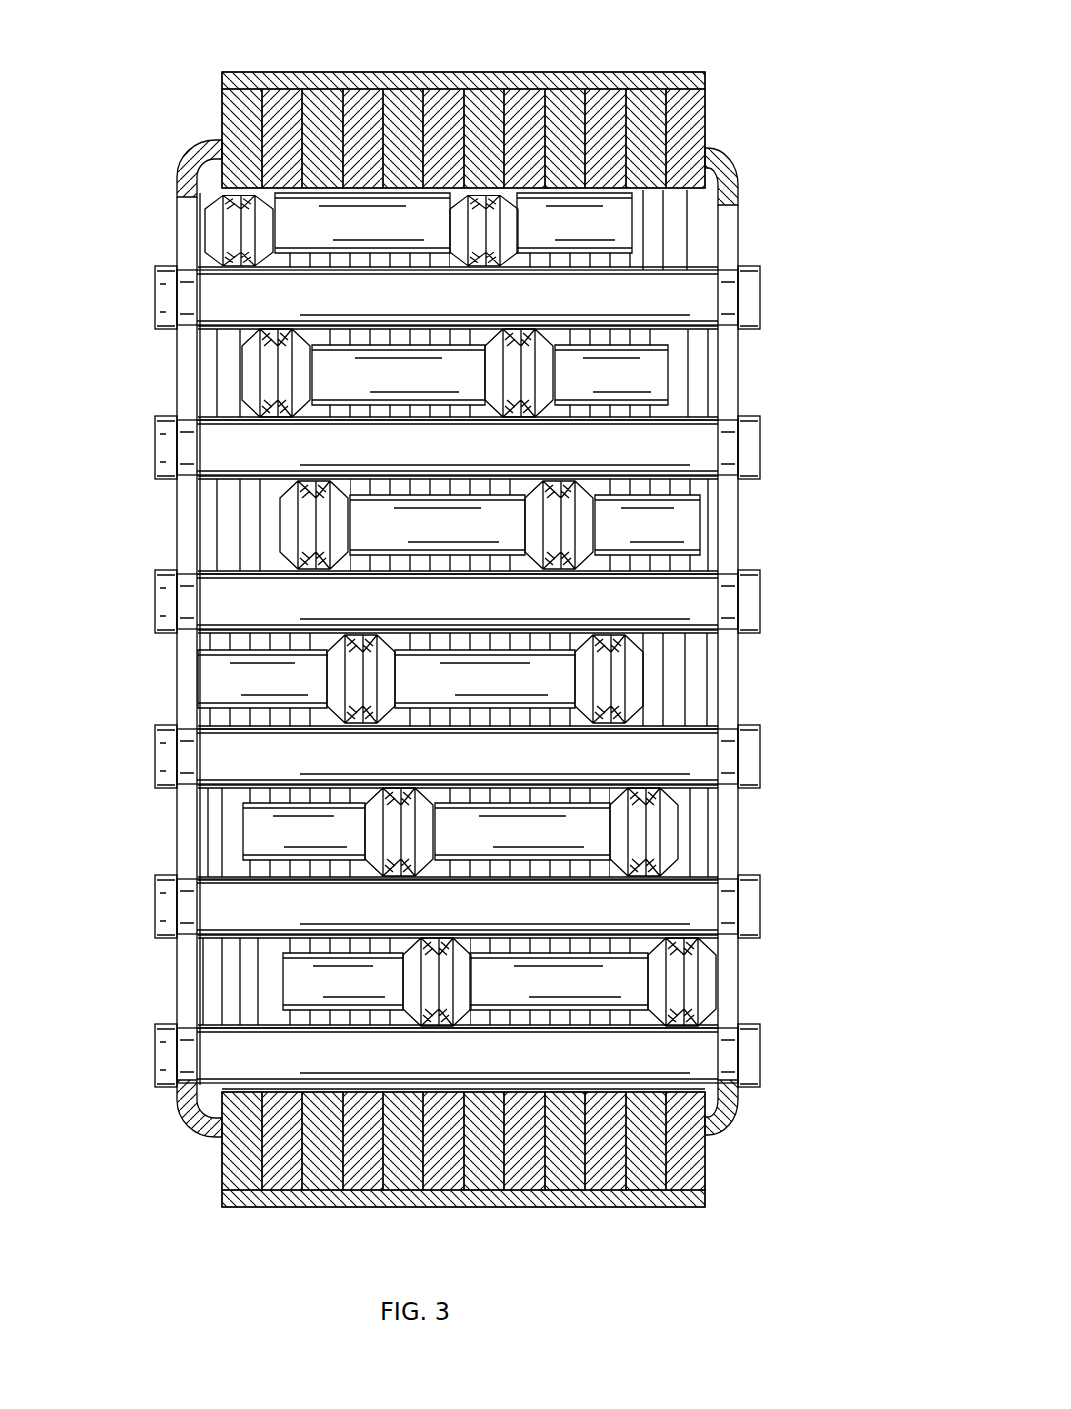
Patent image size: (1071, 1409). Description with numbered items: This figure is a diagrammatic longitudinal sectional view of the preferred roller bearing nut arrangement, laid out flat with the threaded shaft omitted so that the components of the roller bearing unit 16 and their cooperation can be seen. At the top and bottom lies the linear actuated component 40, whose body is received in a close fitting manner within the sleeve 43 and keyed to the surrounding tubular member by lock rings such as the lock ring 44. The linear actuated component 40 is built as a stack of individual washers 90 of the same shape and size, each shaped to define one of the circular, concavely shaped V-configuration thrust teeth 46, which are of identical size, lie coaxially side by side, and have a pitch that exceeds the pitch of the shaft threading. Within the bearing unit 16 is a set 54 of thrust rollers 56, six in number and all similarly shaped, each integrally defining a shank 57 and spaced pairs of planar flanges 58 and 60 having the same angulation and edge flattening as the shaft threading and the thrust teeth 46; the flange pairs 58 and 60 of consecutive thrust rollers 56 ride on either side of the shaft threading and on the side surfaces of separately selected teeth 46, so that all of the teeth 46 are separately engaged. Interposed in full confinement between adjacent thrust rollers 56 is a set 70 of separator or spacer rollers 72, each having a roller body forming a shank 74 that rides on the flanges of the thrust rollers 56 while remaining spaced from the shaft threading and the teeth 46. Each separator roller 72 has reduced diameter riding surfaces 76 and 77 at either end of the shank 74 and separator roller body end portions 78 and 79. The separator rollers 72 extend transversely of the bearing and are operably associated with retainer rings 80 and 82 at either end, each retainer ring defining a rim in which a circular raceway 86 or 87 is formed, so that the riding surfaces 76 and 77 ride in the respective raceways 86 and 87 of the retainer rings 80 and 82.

The roller bearing unit 16 is at (808, 264).
The linear actuated component 40 is at (705, 110).
The sleeve 43 is at (517, 85).
The lock ring 44 is at (647, 117).
The thrust teeth 46 is at (652, 247).
The set of thrust rollers 54 is at (356, 222).
The thrust rollers 56 is at (312, 212).
The shank 57 is at (402, 217).
The pair of flanges 58 is at (213, 233).
The pair of flanges 60 is at (522, 220).
The set of separator rollers 70 is at (258, 1068).
The separator rollers 72 is at (692, 290).
The shank 74 is at (297, 1060).
The riding surface 76 is at (188, 583).
The riding surface 77 is at (742, 1047).
The separator roller body end portion 78 is at (165, 600).
The separator roller body end portion 79 is at (757, 1068).
The retainer ring 80 is at (183, 162).
The retainer ring 82 is at (740, 170).
The raceway 86 is at (178, 1092).
The raceway 87 is at (758, 1055).
The washers 90 is at (330, 1178).